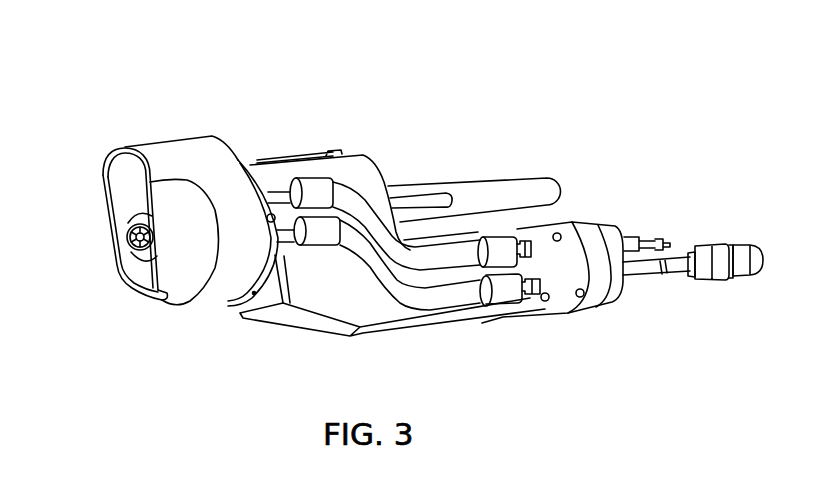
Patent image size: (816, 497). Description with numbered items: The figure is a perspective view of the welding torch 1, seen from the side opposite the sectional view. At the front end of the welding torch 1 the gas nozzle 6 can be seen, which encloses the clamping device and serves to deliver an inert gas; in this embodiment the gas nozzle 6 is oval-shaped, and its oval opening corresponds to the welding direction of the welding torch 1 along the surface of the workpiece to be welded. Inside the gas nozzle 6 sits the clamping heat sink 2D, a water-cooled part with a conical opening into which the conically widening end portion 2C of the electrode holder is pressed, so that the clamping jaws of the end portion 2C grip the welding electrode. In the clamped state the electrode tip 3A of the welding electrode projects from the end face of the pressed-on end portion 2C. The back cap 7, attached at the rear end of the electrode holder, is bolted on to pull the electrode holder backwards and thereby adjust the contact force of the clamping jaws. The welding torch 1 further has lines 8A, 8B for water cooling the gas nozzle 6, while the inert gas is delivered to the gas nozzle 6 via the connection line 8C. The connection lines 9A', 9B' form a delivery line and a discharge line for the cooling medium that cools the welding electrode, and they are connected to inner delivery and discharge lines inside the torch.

The welding torch 1 is at (584, 44).
The end portion 2C is at (130, 225).
The clamping heat sink 2D is at (130, 215).
The electrode tip 3A is at (122, 256).
The gas nozzle 6 is at (183, 297).
The back cap 7 is at (516, 180).
The line 8A is at (447, 257).
The line 8B is at (460, 293).
The connection line 8C is at (648, 233).
The connection line 9A' is at (710, 230).
The connection line 9B' is at (760, 227).